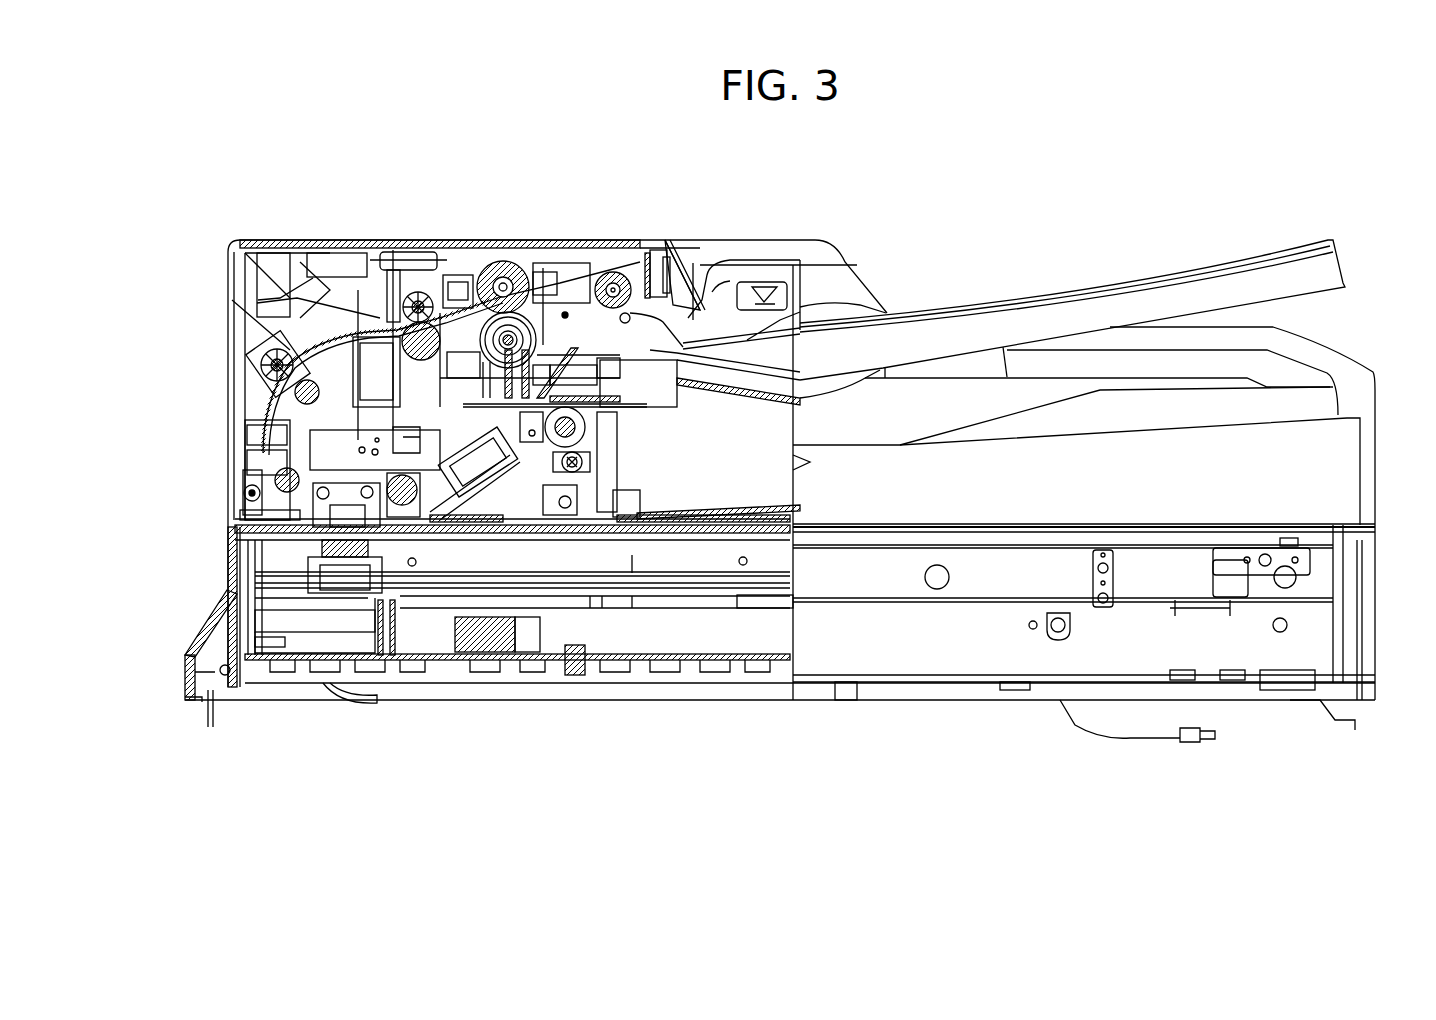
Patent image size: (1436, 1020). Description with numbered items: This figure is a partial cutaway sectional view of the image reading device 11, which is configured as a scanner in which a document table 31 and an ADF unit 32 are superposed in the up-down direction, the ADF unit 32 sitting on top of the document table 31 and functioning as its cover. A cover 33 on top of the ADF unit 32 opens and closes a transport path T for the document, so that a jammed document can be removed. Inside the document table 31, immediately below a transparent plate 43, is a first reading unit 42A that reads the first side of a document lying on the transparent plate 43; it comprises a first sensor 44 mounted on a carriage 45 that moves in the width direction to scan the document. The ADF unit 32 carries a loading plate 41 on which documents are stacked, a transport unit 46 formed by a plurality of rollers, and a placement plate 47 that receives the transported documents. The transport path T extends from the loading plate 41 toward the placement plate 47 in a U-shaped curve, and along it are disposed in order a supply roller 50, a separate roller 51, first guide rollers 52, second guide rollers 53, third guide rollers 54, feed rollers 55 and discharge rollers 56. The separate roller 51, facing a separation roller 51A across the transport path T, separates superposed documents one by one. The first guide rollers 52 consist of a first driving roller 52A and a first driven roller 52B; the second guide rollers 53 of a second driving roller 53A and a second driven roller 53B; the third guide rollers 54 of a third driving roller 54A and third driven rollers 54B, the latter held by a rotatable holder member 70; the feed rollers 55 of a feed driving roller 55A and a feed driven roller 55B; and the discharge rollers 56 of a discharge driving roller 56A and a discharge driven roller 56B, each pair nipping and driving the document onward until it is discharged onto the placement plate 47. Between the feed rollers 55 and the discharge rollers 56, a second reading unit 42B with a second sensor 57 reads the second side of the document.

The image reading device 11 is at (1078, 180).
The document table 31 is at (1330, 635).
The ADF unit 32 is at (1352, 465).
The cover 33 is at (337, 238).
The loading plate 41 is at (888, 314).
The first reading unit 42A is at (387, 553).
The second reading unit 42B is at (447, 437).
The transparent plate 43 is at (250, 514).
The first sensor 44 is at (300, 548).
The carriage 45 is at (332, 545).
The transport unit 46 is at (673, 306).
The placement plate 47 is at (795, 460).
The supply roller 50 is at (615, 262).
The separate roller 51 is at (508, 255).
The separation roller 51A is at (528, 318).
The first guide rollers 52 is at (492, 186).
The first driving roller 52A is at (459, 250).
The first driven roller 52B is at (398, 250).
The second guide rollers 53 is at (118, 305).
The second driving roller 53A is at (257, 387).
The second driven roller 53B is at (257, 343).
The third guide rollers 54 is at (110, 405).
The third driving roller 54A is at (257, 423).
The third driven rollers 54B is at (257, 463).
The feed rollers 55 is at (660, 768).
The feed driving roller 55A is at (598, 640).
The feed driven roller 55B is at (530, 640).
The discharge rollers 56 is at (700, 440).
The discharge driving roller 56A is at (586, 438).
The discharge driven roller 56B is at (590, 465).
The second sensor 57 is at (372, 455).
The holder member 70 is at (253, 503).
The transport path T is at (566, 313).